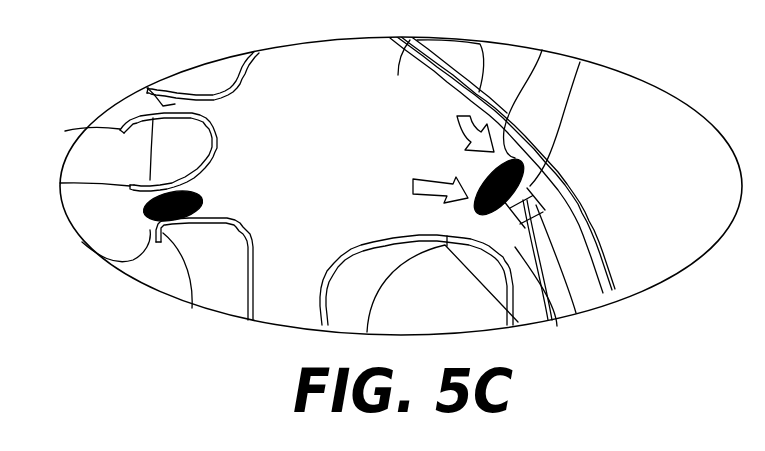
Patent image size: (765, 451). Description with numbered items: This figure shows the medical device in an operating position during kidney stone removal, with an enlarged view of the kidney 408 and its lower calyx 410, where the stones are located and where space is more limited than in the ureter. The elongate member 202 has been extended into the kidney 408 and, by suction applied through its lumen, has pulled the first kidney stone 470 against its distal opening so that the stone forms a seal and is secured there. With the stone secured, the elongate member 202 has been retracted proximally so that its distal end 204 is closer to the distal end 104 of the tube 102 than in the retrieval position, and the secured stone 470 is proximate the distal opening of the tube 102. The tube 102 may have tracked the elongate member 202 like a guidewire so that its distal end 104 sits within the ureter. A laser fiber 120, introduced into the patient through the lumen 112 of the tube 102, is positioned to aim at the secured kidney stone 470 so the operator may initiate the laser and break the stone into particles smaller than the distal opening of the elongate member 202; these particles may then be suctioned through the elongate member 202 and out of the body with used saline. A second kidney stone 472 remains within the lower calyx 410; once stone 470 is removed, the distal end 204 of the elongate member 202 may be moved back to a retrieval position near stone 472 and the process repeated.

The tube 102 is at (594, 300).
The distal end of tube 104 is at (557, 326).
The lumen of tube 112 is at (522, 203).
The laser fiber 120 is at (509, 324).
The elongate member 202 is at (592, 270).
The distal end of elongate member 204 is at (580, 62).
The kidney 408 is at (448, 39).
The lower calyx 410 is at (147, 88).
The kidney stone 470 is at (542, 50).
The kidney stone 472 is at (143, 213).